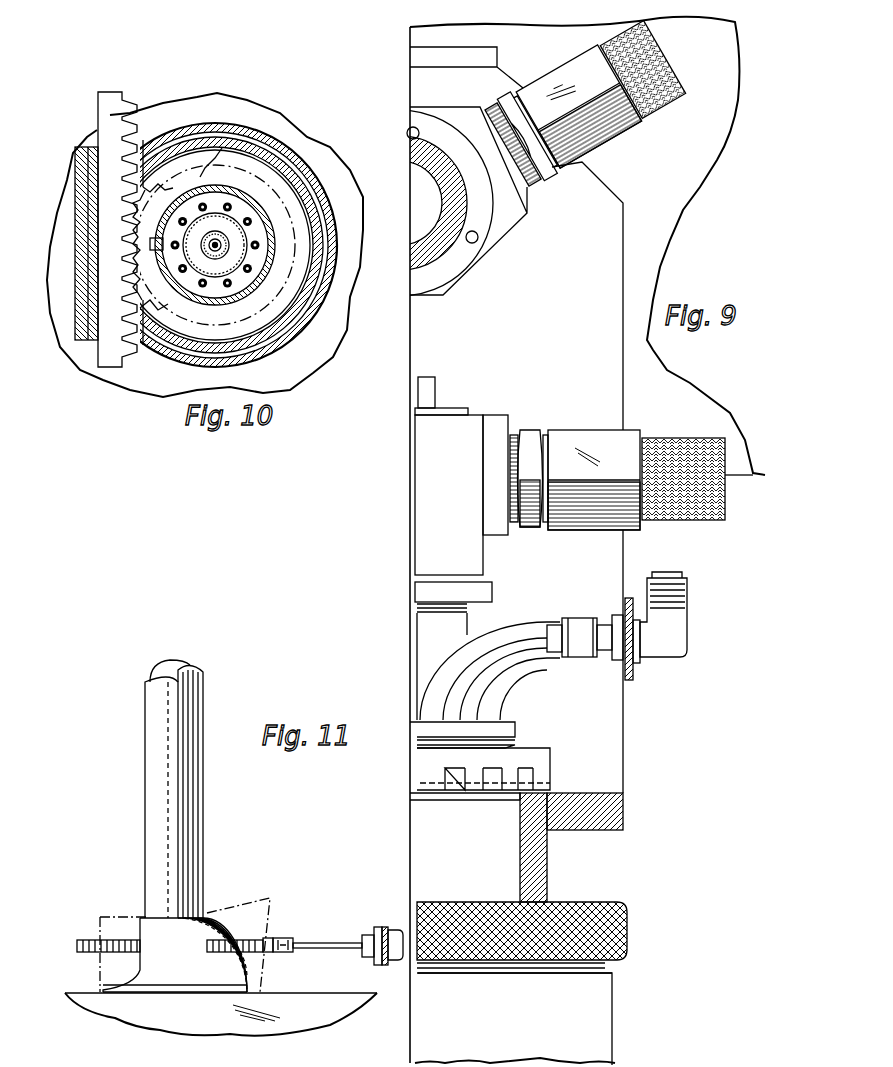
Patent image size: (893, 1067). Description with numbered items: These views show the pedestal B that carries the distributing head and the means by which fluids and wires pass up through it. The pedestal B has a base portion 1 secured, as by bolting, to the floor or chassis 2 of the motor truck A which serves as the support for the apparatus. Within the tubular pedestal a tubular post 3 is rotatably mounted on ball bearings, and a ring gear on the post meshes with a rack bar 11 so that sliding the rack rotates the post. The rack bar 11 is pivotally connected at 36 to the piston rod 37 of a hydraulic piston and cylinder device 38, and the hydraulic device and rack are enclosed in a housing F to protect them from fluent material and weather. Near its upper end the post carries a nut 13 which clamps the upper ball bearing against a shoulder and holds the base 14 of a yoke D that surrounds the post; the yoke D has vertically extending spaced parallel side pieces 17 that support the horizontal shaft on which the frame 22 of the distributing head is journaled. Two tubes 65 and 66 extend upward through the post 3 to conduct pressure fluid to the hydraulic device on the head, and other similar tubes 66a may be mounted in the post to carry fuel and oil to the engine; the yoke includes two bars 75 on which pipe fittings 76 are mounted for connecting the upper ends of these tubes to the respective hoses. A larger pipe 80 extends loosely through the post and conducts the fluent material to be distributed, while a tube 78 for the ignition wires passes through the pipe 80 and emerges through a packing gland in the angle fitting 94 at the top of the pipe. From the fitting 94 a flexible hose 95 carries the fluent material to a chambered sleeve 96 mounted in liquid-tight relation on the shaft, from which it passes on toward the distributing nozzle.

In FIG. 10, the nut 13 is at (307, 157).
In FIG. 9, the nut 13 is at (613, 1040).
In FIG. 10, the tube 65 is at (148, 348).
In FIG. 10, the rack bar 11 is at (90, 343).
In FIG. 10, the tube 66 is at (137, 223).
In FIG. 10, the tubes 66a is at (223, 223).
In FIG. 10, the tube 78 is at (284, 208).
In FIG. 10, the pipe 80 is at (215, 245).
In FIG. 10, the tubular post 3 is at (283, 290).
In FIG. 10, the base portion 1 is at (295, 338).
In FIG. 11, the base portion 1 is at (103, 958).
In FIG. 9, the chambered sleeve 96 is at (406, 131).
In FIG. 9, the frame 22 is at (693, 160).
In FIG. 9, the angle fitting 94 is at (470, 423).
In FIG. 9, the flexible hose 95 is at (705, 522).
In FIG. 9, the bars 75 is at (627, 673).
In FIG. 9, the pipe fittings 76 is at (618, 620).
In FIG. 9, the yoke D is at (628, 757).
In FIG. 9, the side pieces 17 is at (607, 783).
In FIG. 9, the base 14 is at (547, 892).
In FIG. 11, the pedestal B is at (205, 840).
In FIG. 11, the chassis 2 is at (290, 992).
In FIG. 11, the housing F is at (240, 912).
In FIG. 11, the pivotal connection 36 is at (280, 938).
In FIG. 11, the piston rod 37 is at (348, 942).
In FIG. 11, the hydraulic piston and cylinder device 38 is at (390, 935).
In FIG. 11, the motor truck A is at (333, 993).